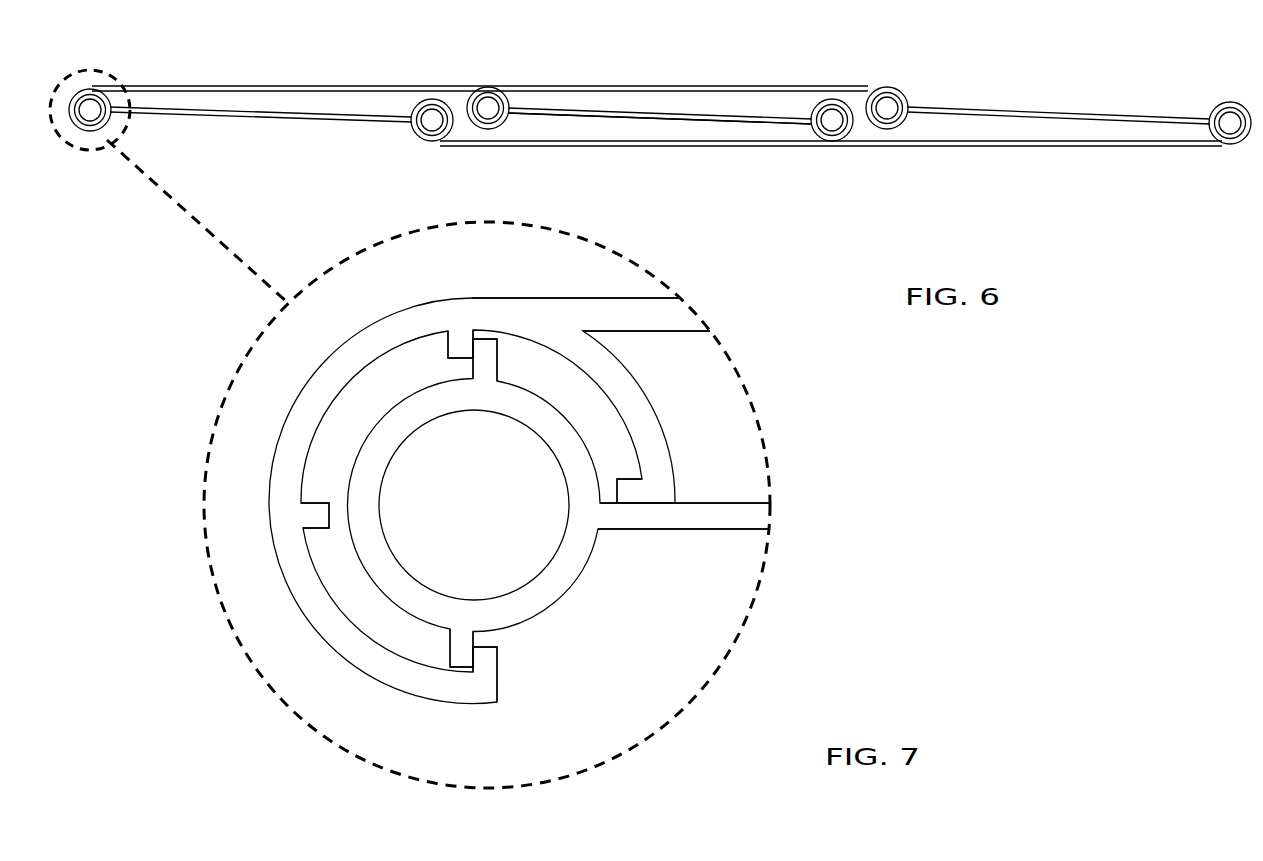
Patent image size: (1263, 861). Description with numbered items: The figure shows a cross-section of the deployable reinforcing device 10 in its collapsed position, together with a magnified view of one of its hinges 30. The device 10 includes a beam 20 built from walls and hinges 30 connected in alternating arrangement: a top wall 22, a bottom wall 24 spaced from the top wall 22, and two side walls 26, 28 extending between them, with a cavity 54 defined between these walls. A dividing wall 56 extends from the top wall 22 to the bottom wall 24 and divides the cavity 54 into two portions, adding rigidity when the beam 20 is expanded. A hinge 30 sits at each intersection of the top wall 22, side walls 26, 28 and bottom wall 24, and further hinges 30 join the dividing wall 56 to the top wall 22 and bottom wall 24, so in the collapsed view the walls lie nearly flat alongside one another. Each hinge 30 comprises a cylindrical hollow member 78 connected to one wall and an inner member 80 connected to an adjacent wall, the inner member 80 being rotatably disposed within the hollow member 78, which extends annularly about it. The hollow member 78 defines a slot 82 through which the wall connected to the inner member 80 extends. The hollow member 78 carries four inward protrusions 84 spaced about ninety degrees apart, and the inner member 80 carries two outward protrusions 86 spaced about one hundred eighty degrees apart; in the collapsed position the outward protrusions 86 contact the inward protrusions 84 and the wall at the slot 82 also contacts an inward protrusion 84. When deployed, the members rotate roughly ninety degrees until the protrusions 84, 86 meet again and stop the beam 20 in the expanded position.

In FIG. 6, the deployable reinforcing device 10 is at (673, 56).
In FIG. 6, the beam 20 is at (698, 159).
In FIG. 6, the top wall 22 is at (550, 86).
In FIG. 7, the top wall 22 is at (632, 312).
In FIG. 6, the bottom wall 24 is at (568, 147).
In FIG. 6, the side wall 26 is at (290, 119).
In FIG. 7, the side wall 26 is at (707, 528).
In FIG. 6, the side wall 28 is at (987, 112).
In FIG. 6, the hinge 30 is at (100, 142).
In FIG. 7, the hinge 30 is at (470, 503).
In FIG. 6, the cavity 54 is at (762, 105).
In FIG. 6, the dividing wall 56 is at (684, 114).
In FIG. 7, the hollow member 78 is at (332, 628).
In FIG. 7, the inner member 80 is at (375, 460).
In FIG. 7, the slot 82 is at (525, 647).
In FIG. 7, the inward protrusion 84 is at (452, 346).
In FIG. 7, the outward protrusion 86 is at (497, 355).